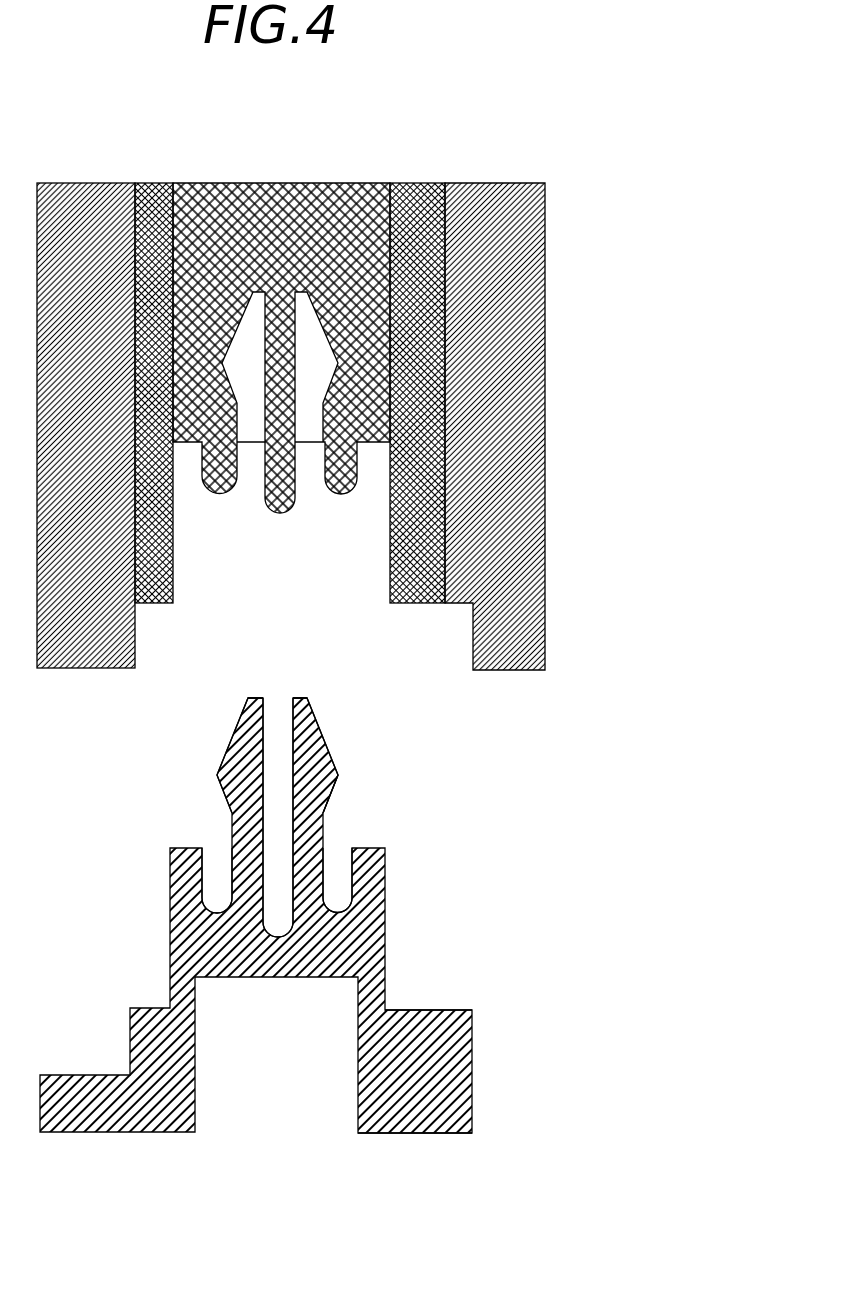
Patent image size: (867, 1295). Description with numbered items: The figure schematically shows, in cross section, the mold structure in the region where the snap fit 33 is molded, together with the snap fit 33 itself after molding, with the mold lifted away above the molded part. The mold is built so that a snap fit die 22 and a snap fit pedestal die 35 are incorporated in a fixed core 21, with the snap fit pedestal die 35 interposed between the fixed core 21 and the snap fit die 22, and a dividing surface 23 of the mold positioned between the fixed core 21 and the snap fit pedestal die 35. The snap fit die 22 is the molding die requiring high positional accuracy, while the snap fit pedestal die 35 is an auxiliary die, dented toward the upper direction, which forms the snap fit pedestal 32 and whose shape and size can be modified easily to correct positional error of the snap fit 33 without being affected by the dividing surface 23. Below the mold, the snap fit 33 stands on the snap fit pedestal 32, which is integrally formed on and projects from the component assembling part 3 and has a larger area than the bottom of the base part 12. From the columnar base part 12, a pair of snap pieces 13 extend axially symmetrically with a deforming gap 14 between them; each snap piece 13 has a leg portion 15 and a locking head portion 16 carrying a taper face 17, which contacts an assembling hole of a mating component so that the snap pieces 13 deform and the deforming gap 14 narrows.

The component assembling part 3 is at (406, 1128).
The base part 12 is at (387, 938).
The snap piece 13 is at (338, 821).
The deforming gap 14 is at (280, 727).
The leg portion 15 is at (323, 882).
The locking head portion 16 is at (333, 757).
The taper face 17 is at (313, 748).
The fixed core 21 is at (341, 426).
The snap fit die 22 is at (290, 183).
The dividing surface 23 is at (465, 237).
The snap fit pedestal 32 is at (432, 1008).
The snap fit 33 is at (311, 920).
The snap fit pedestal die 35 is at (432, 183).